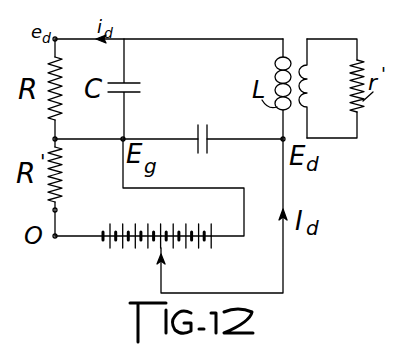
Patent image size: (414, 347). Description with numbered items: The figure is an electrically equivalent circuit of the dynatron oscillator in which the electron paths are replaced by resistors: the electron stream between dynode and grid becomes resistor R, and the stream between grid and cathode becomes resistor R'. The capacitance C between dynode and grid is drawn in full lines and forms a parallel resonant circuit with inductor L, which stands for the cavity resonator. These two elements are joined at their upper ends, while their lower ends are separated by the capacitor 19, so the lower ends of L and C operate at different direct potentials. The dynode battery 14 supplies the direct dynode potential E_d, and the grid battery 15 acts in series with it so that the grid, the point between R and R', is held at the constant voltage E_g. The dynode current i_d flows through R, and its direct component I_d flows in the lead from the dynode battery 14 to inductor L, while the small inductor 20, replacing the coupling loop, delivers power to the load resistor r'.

The dynode battery 14 is at (147, 259).
The grid battery 15 is at (182, 260).
The capacitor 19 is at (209, 136).
The small inductor 20 is at (311, 82).